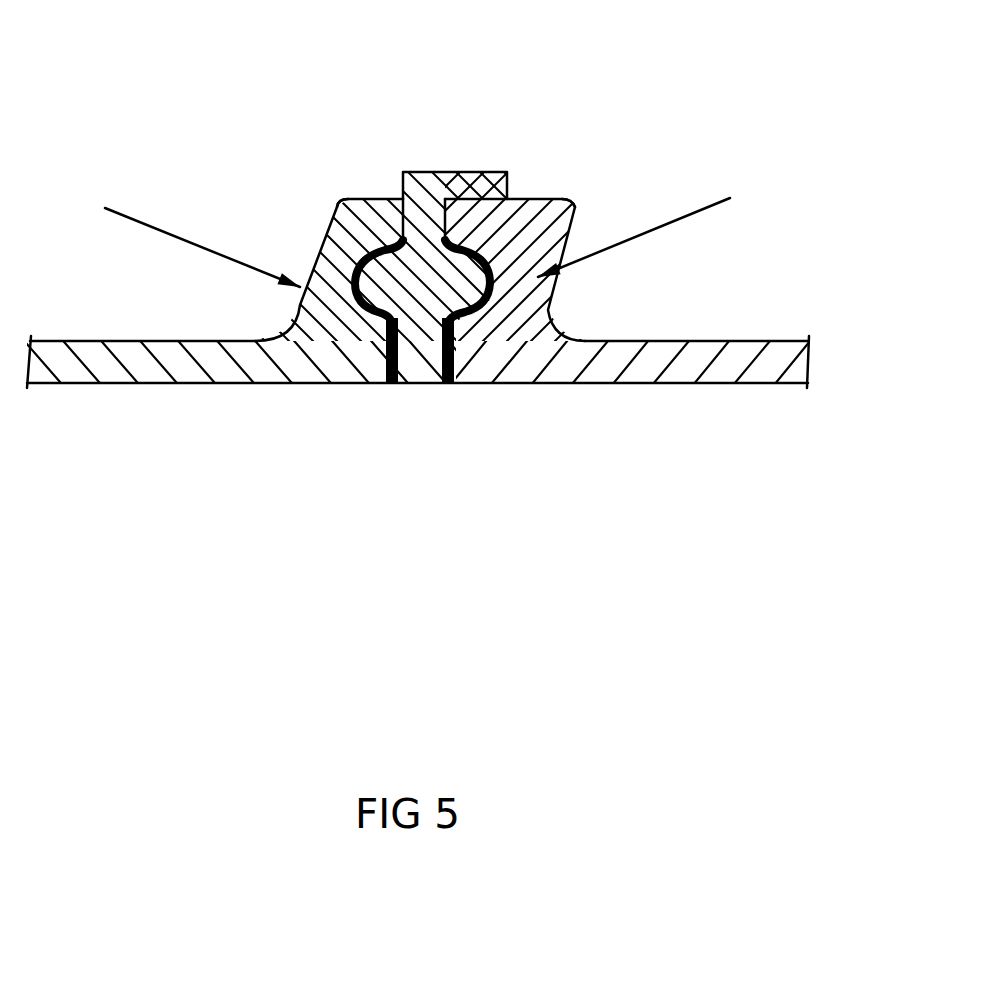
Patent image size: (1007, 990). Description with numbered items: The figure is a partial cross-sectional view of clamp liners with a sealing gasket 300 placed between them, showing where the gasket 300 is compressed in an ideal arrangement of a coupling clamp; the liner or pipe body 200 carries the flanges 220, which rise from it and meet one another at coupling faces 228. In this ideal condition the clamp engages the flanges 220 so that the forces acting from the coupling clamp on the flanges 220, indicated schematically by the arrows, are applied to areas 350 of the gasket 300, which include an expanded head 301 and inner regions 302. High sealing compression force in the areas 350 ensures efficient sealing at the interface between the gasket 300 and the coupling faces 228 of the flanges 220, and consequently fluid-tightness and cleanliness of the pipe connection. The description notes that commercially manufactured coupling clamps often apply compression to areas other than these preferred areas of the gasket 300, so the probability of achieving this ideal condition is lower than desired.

The base plate 200 is at (145, 373).
The flanges 220 is at (332, 262).
The coupling faces 228 is at (363, 200).
The gasket 300 is at (403, 176).
The expanded head 301 is at (430, 232).
The inner regions 302 is at (432, 352).
The areas of the gasket 350 is at (475, 365).